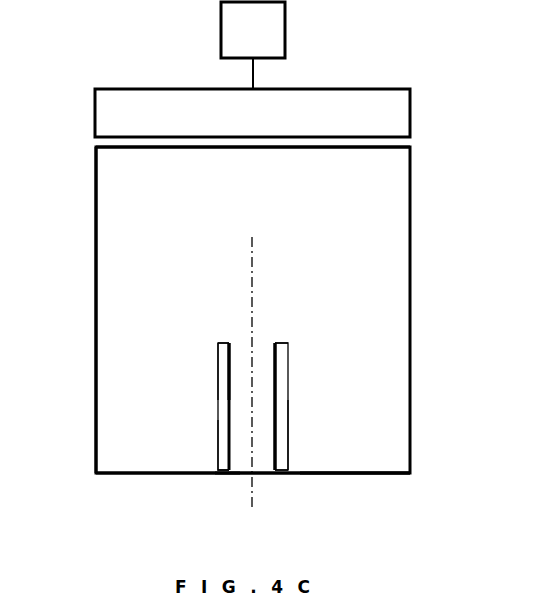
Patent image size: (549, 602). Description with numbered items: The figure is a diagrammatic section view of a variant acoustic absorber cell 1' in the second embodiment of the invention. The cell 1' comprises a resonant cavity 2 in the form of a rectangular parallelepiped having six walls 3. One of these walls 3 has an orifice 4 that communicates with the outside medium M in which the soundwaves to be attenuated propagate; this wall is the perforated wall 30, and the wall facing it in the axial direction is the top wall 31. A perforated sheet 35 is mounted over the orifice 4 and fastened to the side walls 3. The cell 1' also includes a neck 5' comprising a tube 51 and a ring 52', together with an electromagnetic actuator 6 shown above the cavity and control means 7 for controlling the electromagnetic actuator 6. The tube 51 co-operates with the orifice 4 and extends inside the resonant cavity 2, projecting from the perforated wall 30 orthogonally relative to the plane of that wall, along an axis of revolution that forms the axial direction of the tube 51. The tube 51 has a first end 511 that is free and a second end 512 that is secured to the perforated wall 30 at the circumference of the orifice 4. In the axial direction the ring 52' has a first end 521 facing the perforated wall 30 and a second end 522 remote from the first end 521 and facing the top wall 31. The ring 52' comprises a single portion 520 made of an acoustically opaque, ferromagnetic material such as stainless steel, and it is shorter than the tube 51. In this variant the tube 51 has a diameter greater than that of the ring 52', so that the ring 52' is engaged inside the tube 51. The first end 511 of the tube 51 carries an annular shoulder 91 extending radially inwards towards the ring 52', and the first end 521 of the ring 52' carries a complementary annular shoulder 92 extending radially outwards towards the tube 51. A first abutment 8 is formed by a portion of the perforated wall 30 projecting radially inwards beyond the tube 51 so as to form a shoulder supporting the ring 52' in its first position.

The acoustic absorber cell 1' is at (66, 35).
The control means 7 is at (253, 30).
The electromagnetic actuator 6 is at (252, 113).
The resonant cavity 2 is at (380, 238).
The walls 3 is at (118, 147).
The top wall 31 is at (387, 149).
The perforated wall 30 is at (145, 475).
The first abutment 8 is at (343, 473).
The perforated sheet 35 is at (227, 475).
The outside medium M is at (53, 305).
The orifice 4 is at (244, 476).
The tube 51 is at (218, 397).
The first end of the tube 511 is at (210, 336).
The second end of the tube 512 is at (212, 468).
The single portion 520 is at (218, 360).
The annular shoulder 91 is at (228, 340).
The ring 52' is at (296, 406).
The second end of the ring 522 is at (278, 338).
The first end of the ring 521 is at (268, 476).
The neck 5' is at (320, 401).
The complementary annular shoulder 92 is at (283, 468).